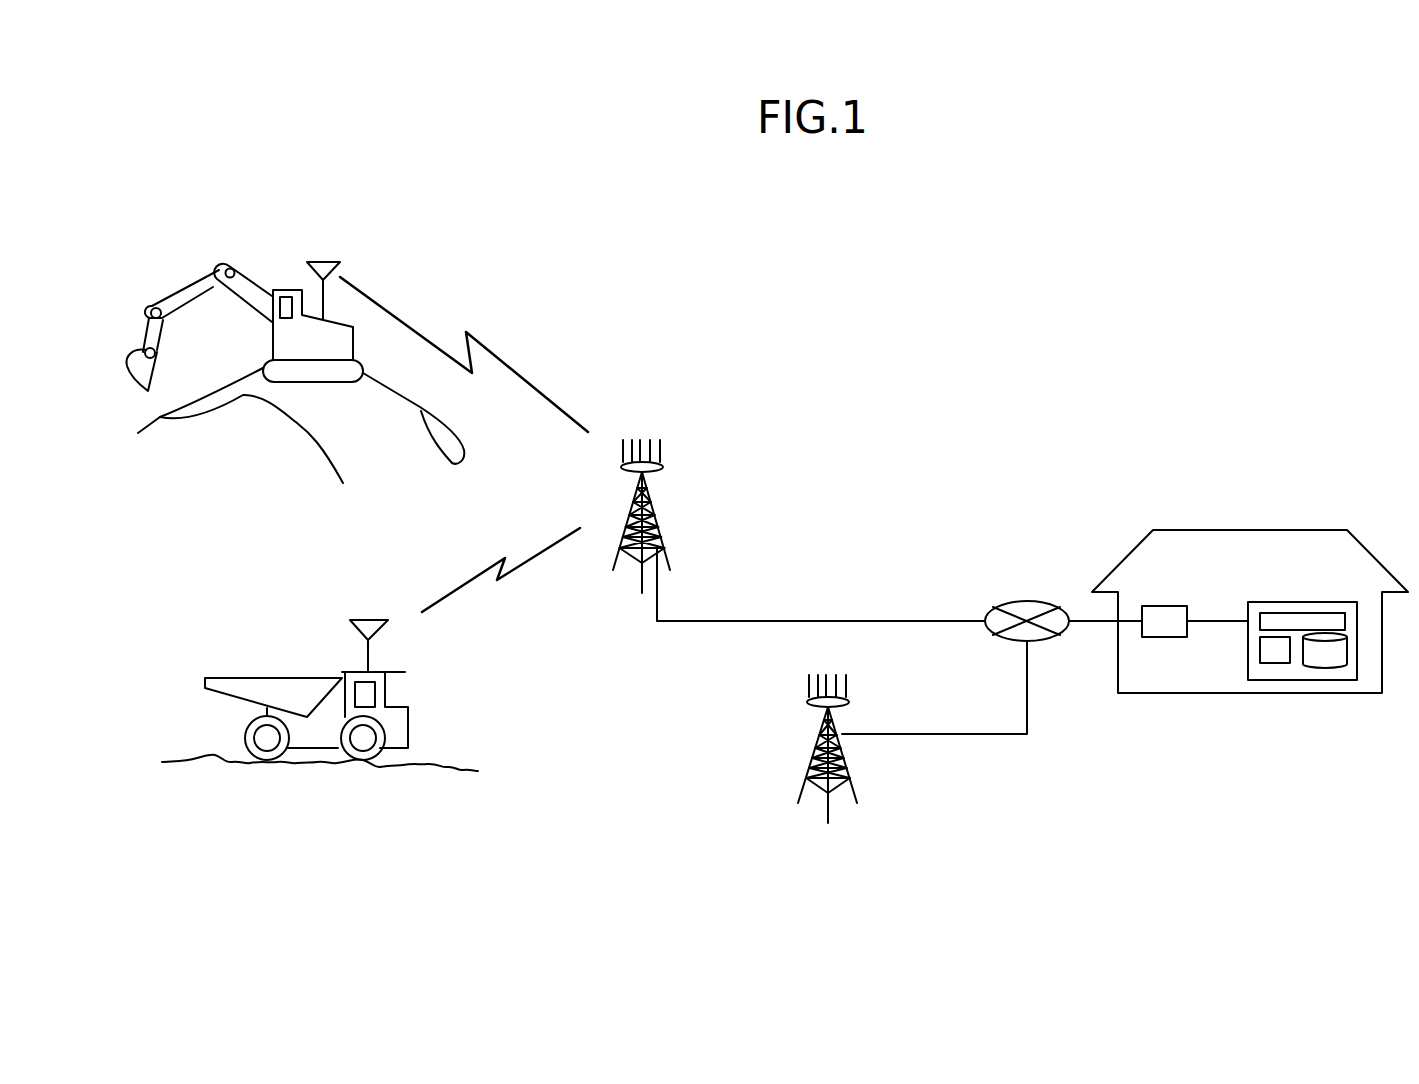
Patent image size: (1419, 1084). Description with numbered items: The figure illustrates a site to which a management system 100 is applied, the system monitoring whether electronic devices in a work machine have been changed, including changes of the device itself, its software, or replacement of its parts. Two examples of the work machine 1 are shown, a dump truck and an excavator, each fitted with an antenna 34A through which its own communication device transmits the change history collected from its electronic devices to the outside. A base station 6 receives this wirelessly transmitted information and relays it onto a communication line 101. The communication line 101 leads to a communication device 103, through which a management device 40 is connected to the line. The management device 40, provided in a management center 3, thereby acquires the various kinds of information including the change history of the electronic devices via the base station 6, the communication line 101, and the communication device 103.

The work machine 1 is at (337, 333).
The management center 3 is at (1258, 527).
The base station 6 is at (657, 510).
The antenna 34A is at (328, 262).
The management device 40 is at (1293, 602).
The management system 100 is at (1019, 299).
The communication line 101 is at (1025, 600).
The communication device 103 is at (1162, 605).